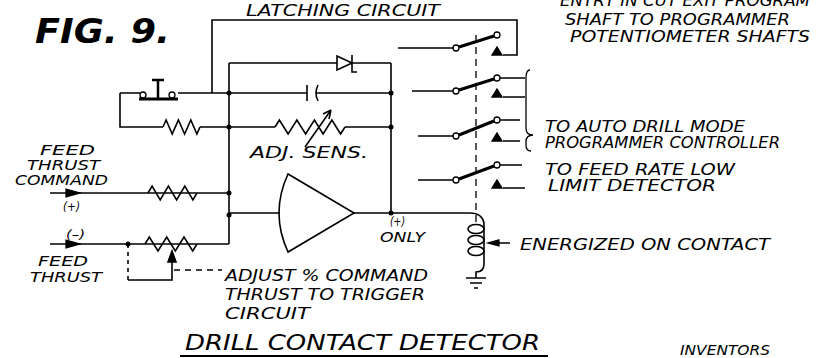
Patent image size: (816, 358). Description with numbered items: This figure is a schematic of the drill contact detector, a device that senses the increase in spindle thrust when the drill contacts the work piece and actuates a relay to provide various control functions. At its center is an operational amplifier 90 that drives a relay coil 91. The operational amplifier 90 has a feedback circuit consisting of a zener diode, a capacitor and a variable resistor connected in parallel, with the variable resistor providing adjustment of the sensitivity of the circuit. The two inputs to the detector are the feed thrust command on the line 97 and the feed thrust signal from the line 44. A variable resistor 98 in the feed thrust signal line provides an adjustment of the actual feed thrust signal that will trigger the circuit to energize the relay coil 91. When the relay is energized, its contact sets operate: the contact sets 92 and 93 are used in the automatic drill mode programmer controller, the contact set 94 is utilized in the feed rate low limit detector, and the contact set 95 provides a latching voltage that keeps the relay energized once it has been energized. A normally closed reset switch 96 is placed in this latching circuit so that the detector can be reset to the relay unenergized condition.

The feed thrust signal line 44 is at (116, 268).
The operational amplifier 90 is at (305, 187).
The relay coil 91 is at (485, 228).
The contact set 92 is at (520, 86).
The contact set 93 is at (513, 130).
The contact set 94 is at (514, 175).
The contact set 95 is at (520, 55).
The reset switch 96 is at (137, 92).
The feed thrust command line 97 is at (120, 193).
The variable resistor 98 is at (172, 232).